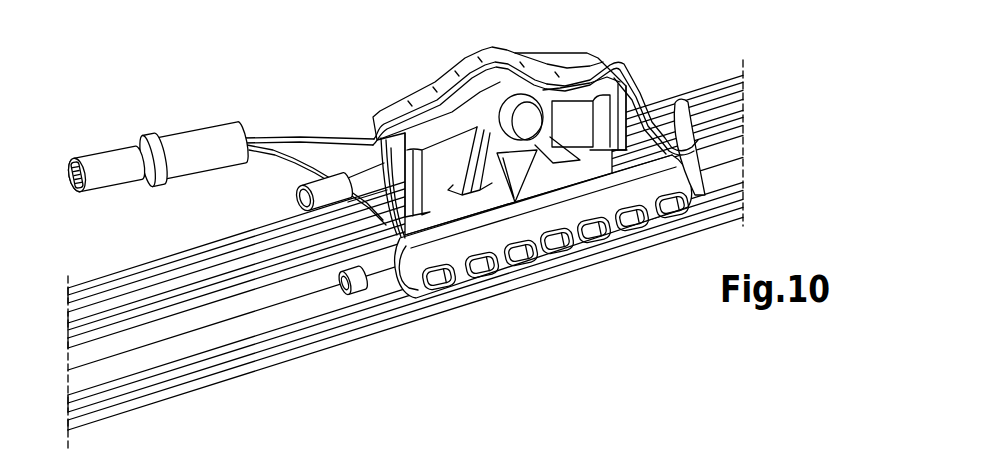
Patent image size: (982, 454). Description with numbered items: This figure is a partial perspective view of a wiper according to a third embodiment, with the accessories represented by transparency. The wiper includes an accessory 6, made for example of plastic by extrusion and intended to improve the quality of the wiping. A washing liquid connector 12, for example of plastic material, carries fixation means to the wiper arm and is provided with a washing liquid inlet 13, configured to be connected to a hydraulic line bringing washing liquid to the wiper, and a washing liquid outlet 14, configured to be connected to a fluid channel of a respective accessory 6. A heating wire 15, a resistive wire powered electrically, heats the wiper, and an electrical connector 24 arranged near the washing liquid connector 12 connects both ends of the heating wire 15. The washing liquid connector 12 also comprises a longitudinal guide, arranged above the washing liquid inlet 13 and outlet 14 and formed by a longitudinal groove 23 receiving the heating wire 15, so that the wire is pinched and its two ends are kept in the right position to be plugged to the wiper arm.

The accessory 6 is at (710, 112).
The washing liquid connector 12 is at (435, 90).
The washing liquid inlet 13 is at (298, 200).
The washing liquid outlet 14 is at (334, 297).
The heating wire 15 is at (322, 142).
The longitudinal groove 23 is at (557, 67).
The electrical connector 24 is at (113, 160).